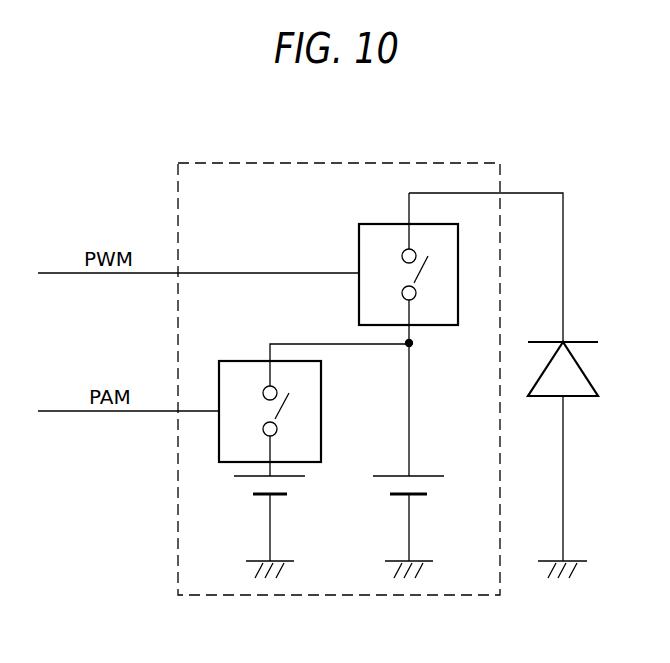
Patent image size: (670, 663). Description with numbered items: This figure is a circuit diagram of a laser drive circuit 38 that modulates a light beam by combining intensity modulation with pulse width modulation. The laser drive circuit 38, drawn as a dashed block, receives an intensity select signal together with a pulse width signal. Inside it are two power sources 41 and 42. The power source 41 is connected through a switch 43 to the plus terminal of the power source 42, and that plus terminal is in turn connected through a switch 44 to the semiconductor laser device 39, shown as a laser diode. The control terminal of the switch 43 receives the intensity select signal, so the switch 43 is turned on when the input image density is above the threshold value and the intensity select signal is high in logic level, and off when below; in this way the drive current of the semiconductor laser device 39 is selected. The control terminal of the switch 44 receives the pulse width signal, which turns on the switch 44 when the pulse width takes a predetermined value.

The laser drive circuit 38 is at (222, 162).
The semiconductor laser device 39 is at (584, 337).
The power source 41 is at (256, 495).
The power source 42 is at (395, 495).
The switch 43 is at (239, 360).
The switch 44 is at (358, 242).